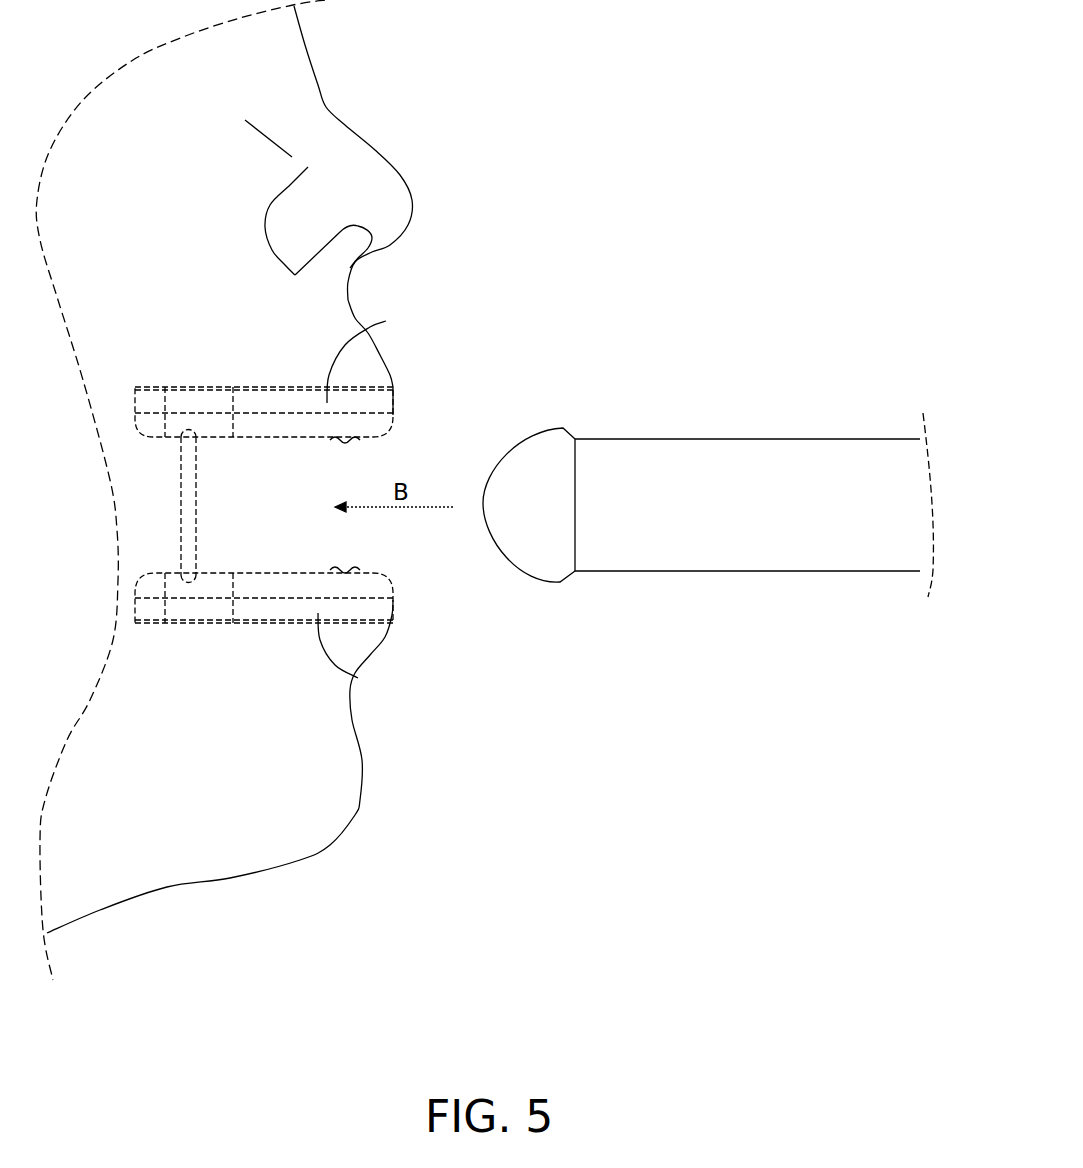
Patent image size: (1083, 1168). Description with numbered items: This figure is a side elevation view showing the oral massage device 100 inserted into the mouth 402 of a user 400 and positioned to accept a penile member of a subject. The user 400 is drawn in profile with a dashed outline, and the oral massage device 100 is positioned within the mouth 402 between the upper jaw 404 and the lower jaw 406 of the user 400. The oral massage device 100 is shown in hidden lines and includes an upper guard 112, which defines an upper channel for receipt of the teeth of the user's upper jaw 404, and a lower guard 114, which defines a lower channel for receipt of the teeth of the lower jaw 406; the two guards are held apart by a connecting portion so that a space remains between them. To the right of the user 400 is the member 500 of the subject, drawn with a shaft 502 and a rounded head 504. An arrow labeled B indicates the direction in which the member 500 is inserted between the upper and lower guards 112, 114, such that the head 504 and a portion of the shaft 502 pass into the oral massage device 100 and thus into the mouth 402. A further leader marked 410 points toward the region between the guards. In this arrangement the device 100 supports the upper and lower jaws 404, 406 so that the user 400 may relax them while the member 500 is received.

The oral massage device 100 is at (172, 643).
The upper guard 112 is at (386, 321).
The lower guard 114 is at (358, 678).
The user 400 is at (125, 62).
The mouth 402 is at (403, 523).
The upper jaw 404 is at (392, 378).
The lower jaw 406 is at (383, 642).
The gap between trays 410 is at (395, 457).
The member 500 is at (708, 470).
The shaft 502 is at (775, 438).
The head 504 is at (530, 433).